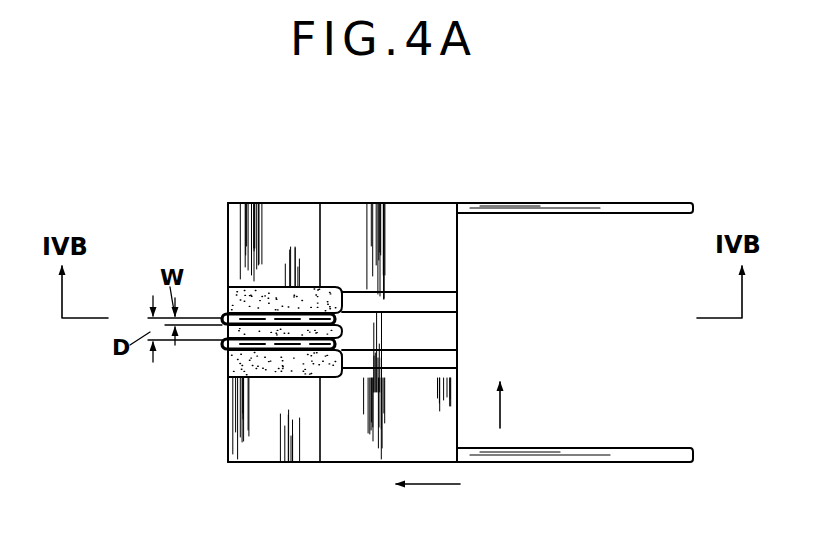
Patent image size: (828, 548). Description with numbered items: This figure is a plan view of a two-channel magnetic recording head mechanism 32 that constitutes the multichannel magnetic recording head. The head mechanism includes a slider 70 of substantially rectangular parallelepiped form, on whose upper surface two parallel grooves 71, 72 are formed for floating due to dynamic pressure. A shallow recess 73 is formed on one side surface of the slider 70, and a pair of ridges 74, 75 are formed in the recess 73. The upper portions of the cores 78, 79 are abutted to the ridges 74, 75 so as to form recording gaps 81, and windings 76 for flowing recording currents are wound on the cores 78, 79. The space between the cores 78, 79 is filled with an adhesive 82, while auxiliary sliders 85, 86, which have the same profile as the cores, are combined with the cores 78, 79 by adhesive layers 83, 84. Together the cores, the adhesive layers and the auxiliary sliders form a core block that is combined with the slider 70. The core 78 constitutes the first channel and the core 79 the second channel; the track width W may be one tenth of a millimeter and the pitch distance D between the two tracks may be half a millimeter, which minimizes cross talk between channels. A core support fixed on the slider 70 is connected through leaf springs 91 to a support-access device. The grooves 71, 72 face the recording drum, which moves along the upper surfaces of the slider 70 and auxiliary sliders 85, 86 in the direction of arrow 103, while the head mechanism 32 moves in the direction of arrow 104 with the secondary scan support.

The magnetic recording head mechanism 32 is at (176, 170).
The slider 70 is at (405, 220).
The groove 71 is at (427, 300).
The groove 72 is at (420, 360).
The shallow recess 73 is at (336, 377).
The ridge 74 is at (327, 307).
The ridge 75 is at (315, 357).
The windings 76 is at (227, 347).
The core 78 is at (236, 288).
The core 79 is at (290, 345).
The recording gaps 81 is at (317, 310).
The adhesive 82 is at (230, 352).
The adhesive layer 83 is at (283, 303).
The adhesive layer 84 is at (302, 360).
The auxiliary slider 85 is at (248, 217).
The auxiliary slider 86 is at (268, 442).
The leaf springs 91 is at (640, 209).
The arrow 103 is at (432, 486).
The arrow 104 is at (502, 410).